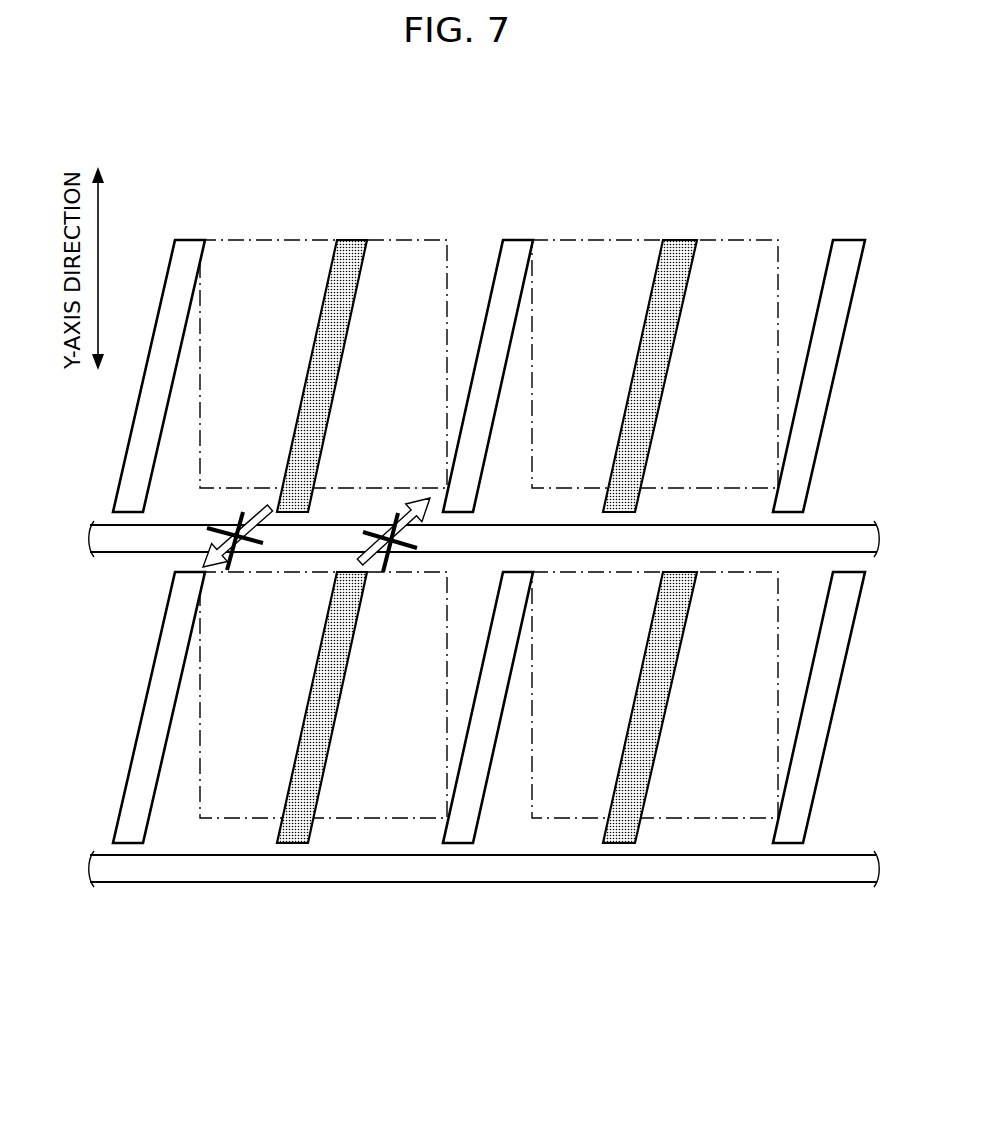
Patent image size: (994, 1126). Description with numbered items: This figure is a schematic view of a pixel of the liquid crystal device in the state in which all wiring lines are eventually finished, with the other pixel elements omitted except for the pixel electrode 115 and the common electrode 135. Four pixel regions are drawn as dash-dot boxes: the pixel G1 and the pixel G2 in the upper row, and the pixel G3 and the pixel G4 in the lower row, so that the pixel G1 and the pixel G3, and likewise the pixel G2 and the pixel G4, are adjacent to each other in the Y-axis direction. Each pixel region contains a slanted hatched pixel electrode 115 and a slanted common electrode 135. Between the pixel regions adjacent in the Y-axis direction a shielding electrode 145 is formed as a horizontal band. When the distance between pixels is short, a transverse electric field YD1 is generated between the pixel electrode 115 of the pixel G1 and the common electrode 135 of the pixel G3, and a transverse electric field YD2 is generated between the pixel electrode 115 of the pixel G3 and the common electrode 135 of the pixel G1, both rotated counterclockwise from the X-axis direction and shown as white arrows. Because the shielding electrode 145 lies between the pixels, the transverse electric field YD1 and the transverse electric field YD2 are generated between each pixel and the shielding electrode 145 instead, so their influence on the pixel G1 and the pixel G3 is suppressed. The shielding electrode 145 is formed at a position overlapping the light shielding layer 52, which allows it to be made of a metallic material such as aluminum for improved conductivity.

The common electrode 135 is at (180, 280).
The pixel electrode 115 is at (330, 337).
The shielding electrode 145 is at (122, 543).
The light shielding layer 52 is at (331, 492).
The pixel G1 is at (390, 240).
The pixel G2 is at (618, 240).
The pixel G3 is at (385, 820).
The pixel G4 is at (715, 823).
The transverse electric field YD1 is at (231, 535).
The transverse electric field YD2 is at (386, 535).